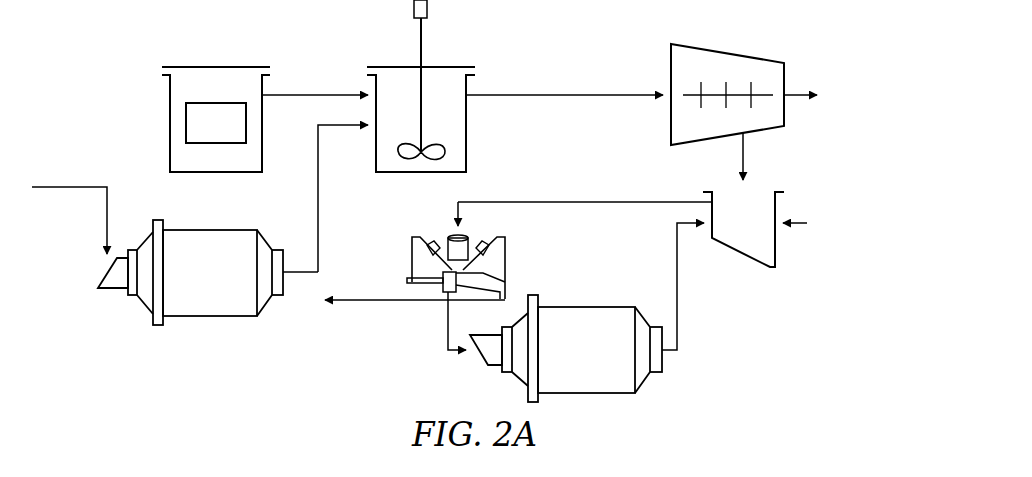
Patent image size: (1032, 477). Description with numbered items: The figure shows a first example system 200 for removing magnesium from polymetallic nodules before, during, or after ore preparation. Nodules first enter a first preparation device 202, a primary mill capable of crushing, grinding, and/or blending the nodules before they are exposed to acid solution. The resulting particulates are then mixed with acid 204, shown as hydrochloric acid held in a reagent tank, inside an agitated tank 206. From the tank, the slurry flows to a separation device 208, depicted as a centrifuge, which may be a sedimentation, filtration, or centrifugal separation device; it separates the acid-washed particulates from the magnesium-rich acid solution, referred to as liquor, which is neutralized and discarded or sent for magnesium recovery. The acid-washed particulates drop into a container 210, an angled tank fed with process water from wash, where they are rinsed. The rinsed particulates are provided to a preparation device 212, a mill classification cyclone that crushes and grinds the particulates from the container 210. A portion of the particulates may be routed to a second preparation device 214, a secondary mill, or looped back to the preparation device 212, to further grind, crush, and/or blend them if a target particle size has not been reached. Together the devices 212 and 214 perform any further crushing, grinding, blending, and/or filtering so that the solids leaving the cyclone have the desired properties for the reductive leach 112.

The system 200 is at (108, 28).
The first preparation device 202 is at (198, 303).
The acid 204 is at (170, 100).
The tank 206 is at (467, 120).
The separation device 208 is at (771, 61).
The container 210 is at (745, 256).
The preparation device 212 is at (516, 245).
The second preparation device 214 is at (571, 383).
The reductive leach 112 is at (380, 302).